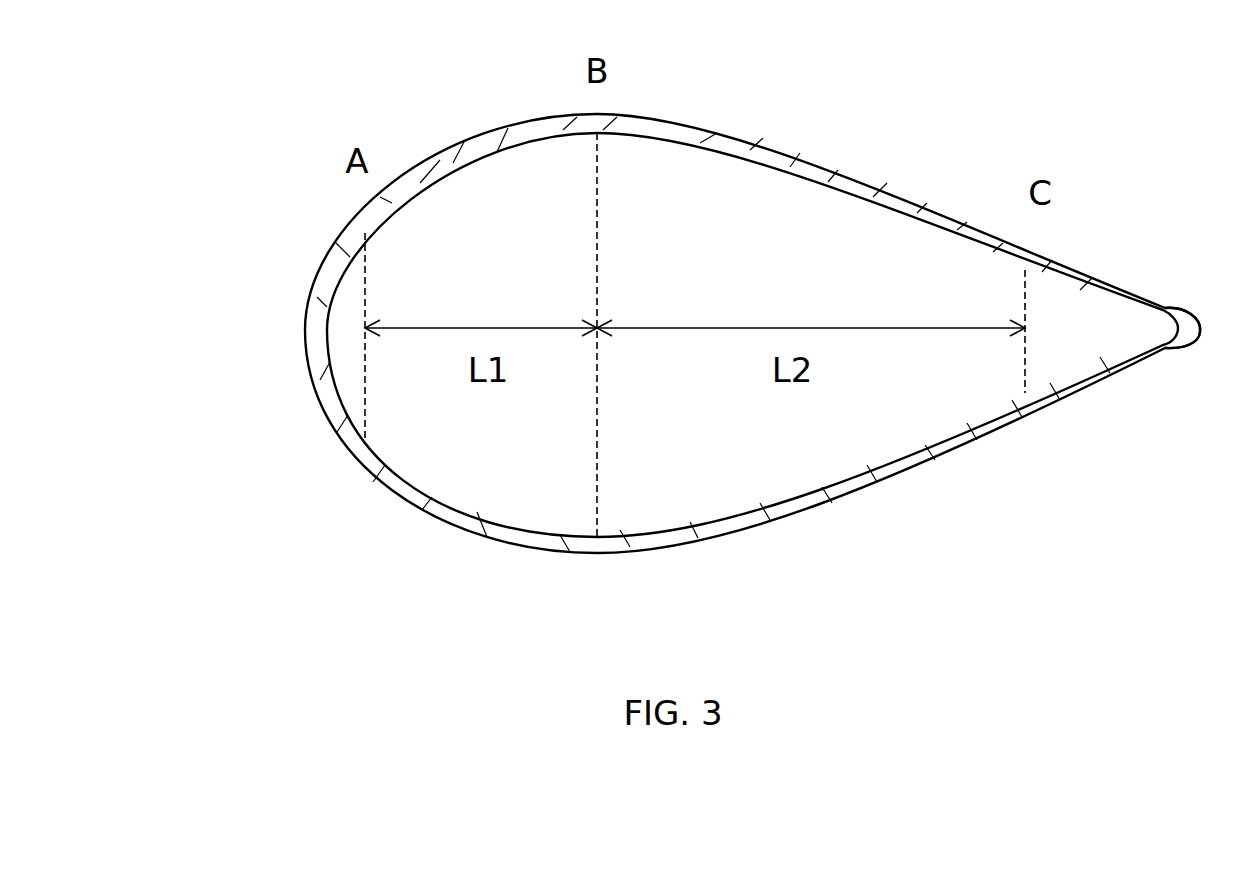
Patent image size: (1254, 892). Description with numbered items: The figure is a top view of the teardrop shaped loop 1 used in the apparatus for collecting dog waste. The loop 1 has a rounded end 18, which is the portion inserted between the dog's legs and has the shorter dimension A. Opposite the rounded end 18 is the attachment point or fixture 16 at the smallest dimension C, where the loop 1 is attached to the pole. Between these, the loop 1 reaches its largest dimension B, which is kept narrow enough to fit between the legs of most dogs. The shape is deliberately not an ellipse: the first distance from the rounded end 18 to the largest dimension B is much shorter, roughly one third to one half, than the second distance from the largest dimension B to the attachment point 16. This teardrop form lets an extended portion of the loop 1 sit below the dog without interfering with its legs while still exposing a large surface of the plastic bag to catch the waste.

The loop 1 is at (810, 167).
The rounded end 18 is at (325, 335).
The attachment point or fixture 16 is at (1183, 328).